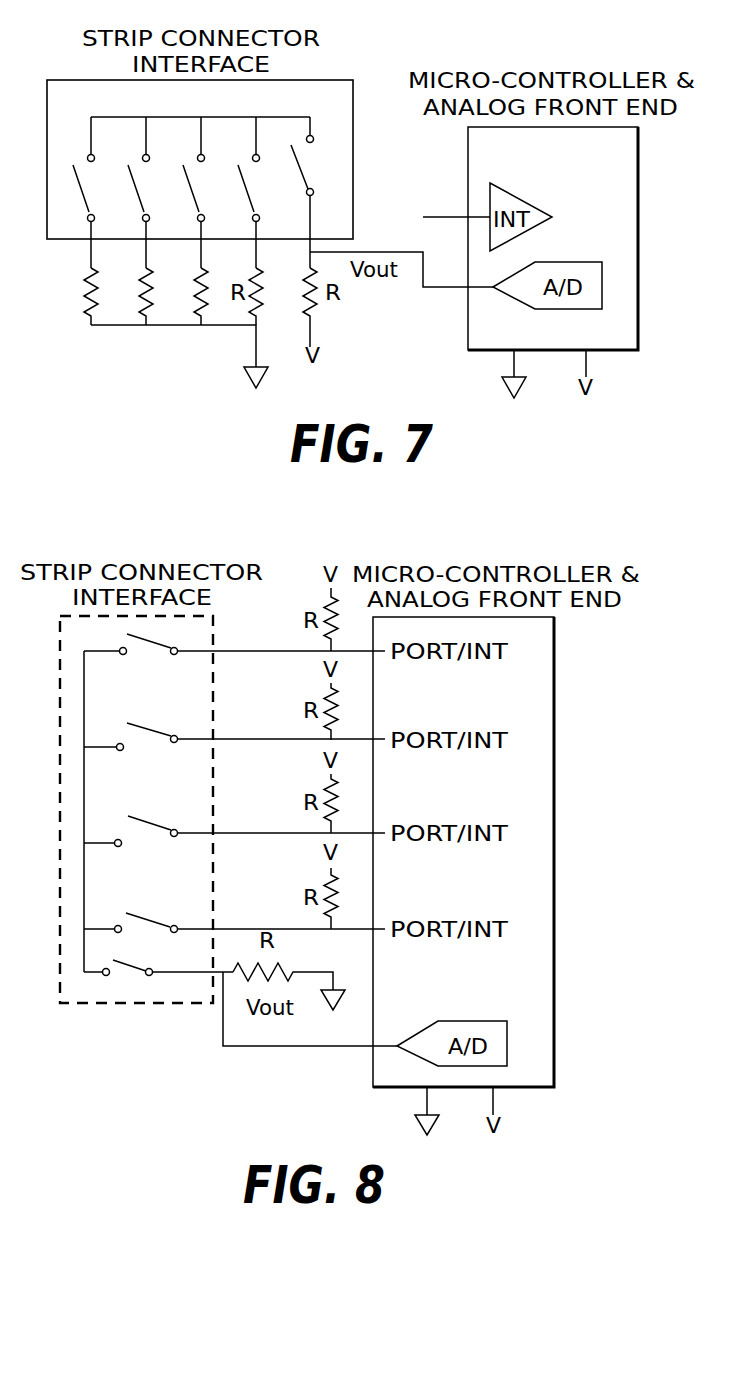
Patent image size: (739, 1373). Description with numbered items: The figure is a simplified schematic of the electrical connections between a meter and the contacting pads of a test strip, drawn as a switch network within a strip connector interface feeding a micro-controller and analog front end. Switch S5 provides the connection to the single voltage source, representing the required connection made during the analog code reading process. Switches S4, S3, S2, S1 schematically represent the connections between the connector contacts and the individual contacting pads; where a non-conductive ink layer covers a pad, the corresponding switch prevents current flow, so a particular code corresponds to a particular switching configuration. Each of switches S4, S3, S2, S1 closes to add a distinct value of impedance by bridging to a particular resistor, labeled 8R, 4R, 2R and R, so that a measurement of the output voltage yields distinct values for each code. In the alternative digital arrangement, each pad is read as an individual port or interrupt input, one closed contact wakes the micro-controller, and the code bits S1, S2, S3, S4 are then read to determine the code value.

In FIG. 7, the switch S1 is at (262, 192).
In FIG. 8, the switch S1 is at (234, 656).
In FIG. 7, the switch S2 is at (207, 192).
In FIG. 8, the switch S2 is at (234, 745).
In FIG. 7, the switch S3 is at (152, 192).
In FIG. 8, the switch S3 is at (234, 839).
In FIG. 7, the switch S4 is at (97, 192).
In FIG. 8, the switch S4 is at (234, 933).
In FIG. 7, the switch S5 is at (316, 192).
In FIG. 8, the switch S5 is at (240, 1003).
In FIG. 7, the resistor 8R is at (72, 296).
In FIG. 7, the resistor 4R is at (130, 296).
In FIG. 7, the resistor 2R is at (187, 296).